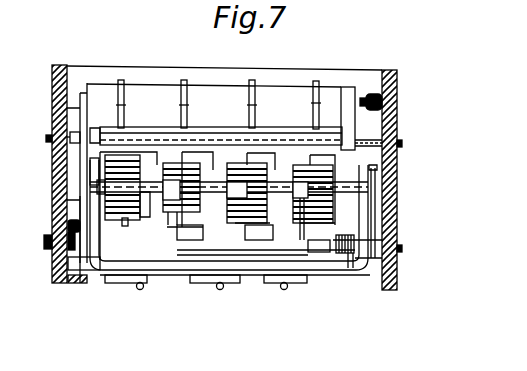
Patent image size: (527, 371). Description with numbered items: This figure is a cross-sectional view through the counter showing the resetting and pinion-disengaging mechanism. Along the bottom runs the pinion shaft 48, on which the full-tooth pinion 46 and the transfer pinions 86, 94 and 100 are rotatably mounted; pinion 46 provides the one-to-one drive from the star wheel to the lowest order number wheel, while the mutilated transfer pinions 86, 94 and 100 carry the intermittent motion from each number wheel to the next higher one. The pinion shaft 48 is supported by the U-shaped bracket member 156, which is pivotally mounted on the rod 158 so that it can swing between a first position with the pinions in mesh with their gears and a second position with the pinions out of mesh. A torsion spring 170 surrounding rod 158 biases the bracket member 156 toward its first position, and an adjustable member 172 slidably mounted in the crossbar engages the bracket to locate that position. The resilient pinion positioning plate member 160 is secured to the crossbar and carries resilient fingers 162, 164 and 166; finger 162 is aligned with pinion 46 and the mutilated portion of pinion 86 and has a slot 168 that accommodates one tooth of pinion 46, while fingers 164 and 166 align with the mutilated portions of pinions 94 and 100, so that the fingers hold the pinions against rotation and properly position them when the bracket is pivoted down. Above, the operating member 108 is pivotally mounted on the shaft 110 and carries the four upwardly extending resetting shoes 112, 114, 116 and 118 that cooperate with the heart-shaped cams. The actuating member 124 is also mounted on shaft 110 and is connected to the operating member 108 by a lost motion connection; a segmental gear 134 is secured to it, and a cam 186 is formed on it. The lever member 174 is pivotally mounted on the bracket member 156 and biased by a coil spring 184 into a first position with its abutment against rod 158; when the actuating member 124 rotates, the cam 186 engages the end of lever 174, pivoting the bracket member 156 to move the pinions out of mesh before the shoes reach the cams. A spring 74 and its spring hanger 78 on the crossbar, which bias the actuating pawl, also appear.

The full-tooth pinion 46 is at (130, 222).
The pinion shaft 48 is at (345, 236).
The spring 74 is at (374, 92).
The spring hanger 78 is at (80, 285).
The transfer pinion 86 is at (177, 200).
The transfer pinion 94 is at (233, 225).
The transfer pinion 100 is at (299, 218).
The operating member 108 is at (210, 95).
The shaft 110 is at (374, 136).
The resetting shoe 112 is at (122, 79).
The resetting shoe 114 is at (185, 78).
The resetting shoe 116 is at (255, 78).
The resetting shoe 118 is at (318, 80).
The actuating member 124 is at (52, 112).
The segmental gear 134 is at (78, 154).
The U-shaped bracket member 156 is at (327, 268).
The rod 158 is at (402, 249).
The resilient pinion positioning plate member 160 is at (253, 248).
The resilient finger 162 is at (152, 158).
The resilient finger 164 is at (218, 160).
The resilient finger 166 is at (284, 163).
The slot 168 is at (148, 205).
The torsion spring 170 is at (352, 250).
The adjustable member 172 is at (205, 279).
The lever member 174 is at (80, 207).
The coil spring 184 is at (63, 230).
The cam 186 is at (88, 182).